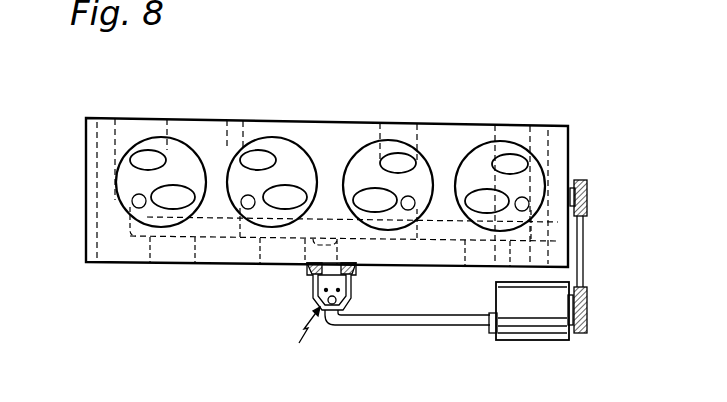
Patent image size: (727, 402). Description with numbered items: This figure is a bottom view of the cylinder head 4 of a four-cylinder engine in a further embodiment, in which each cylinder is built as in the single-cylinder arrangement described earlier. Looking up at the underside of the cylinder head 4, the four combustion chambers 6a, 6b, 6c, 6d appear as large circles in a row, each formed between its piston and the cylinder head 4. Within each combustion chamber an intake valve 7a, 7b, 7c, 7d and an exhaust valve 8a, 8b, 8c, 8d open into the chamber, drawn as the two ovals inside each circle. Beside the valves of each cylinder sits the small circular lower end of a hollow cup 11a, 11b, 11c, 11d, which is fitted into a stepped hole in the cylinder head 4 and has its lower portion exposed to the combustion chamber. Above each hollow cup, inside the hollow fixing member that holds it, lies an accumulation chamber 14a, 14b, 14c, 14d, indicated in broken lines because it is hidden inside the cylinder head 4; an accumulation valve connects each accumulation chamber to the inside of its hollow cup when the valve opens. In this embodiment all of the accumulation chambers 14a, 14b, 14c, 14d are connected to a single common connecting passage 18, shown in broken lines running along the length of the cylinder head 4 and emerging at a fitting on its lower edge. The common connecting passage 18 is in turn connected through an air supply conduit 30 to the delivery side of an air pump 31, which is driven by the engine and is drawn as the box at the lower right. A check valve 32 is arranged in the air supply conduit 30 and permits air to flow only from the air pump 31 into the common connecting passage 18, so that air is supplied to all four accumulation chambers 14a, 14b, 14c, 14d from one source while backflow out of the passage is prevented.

The cylinder head 4 is at (557, 147).
The combustion chamber 6a is at (118, 160).
The combustion chamber 6b is at (232, 162).
The combustion chamber 6c is at (362, 165).
The combustion chamber 6d is at (478, 165).
The intake valve 7a is at (176, 192).
The intake valve 7b is at (288, 195).
The intake valve 7c is at (364, 196).
The intake valve 7d is at (478, 198).
The exhaust valve 8a is at (149, 158).
The exhaust valve 8b is at (259, 157).
The exhaust valve 8c is at (398, 160).
The exhaust valve 8d is at (511, 162).
The hollow cup 11a is at (133, 200).
The hollow cup 11b is at (247, 208).
The hollow cup 11c is at (416, 206).
The hollow cup 11d is at (528, 199).
The accumulation chamber 14a is at (130, 220).
The accumulation chamber 14b is at (243, 226).
The accumulation chamber 14c is at (402, 222).
The accumulation chamber 14d is at (508, 243).
The common connecting passage 18 is at (313, 232).
The air supply conduit 30 is at (394, 327).
The air pump 31 is at (527, 320).
The check valve 32 is at (293, 332).